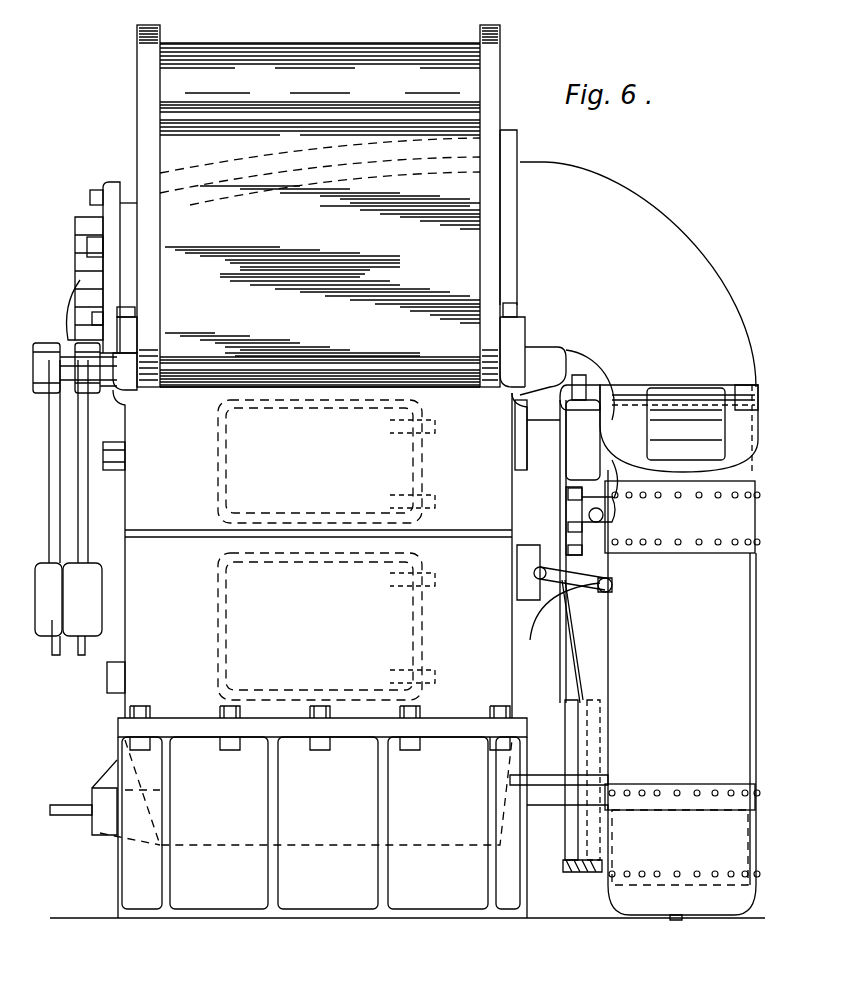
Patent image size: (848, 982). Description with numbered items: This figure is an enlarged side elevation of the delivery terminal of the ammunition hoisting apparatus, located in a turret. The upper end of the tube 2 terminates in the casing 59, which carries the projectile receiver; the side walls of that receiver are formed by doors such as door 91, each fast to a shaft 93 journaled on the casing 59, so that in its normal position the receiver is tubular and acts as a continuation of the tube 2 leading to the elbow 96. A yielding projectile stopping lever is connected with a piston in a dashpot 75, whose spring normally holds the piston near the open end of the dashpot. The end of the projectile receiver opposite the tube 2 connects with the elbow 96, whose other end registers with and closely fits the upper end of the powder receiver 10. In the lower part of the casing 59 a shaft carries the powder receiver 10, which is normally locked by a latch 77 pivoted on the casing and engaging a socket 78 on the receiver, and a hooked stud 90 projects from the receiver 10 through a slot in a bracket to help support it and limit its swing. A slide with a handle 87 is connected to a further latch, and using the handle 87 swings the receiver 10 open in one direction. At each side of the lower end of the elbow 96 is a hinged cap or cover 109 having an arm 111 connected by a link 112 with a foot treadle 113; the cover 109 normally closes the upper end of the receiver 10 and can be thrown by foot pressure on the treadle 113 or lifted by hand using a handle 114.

The tube 2 is at (75, 262).
The door 91 is at (318, 206).
The shaft 93 is at (360, 358).
The elbow 96 is at (638, 274).
The arm 111 is at (578, 378).
The handle 114 is at (684, 405).
The cap or cover 109 is at (659, 428).
The dashpot 75 is at (580, 460).
The hooked stud 90 is at (567, 507).
The handle 87 is at (617, 508).
The powder receiver 10 is at (682, 695).
The latch 77 is at (535, 600).
The socket 78 is at (615, 592).
The casing 59 is at (407, 654).
The link 112 is at (560, 676).
The foot treadle 113 is at (588, 720).